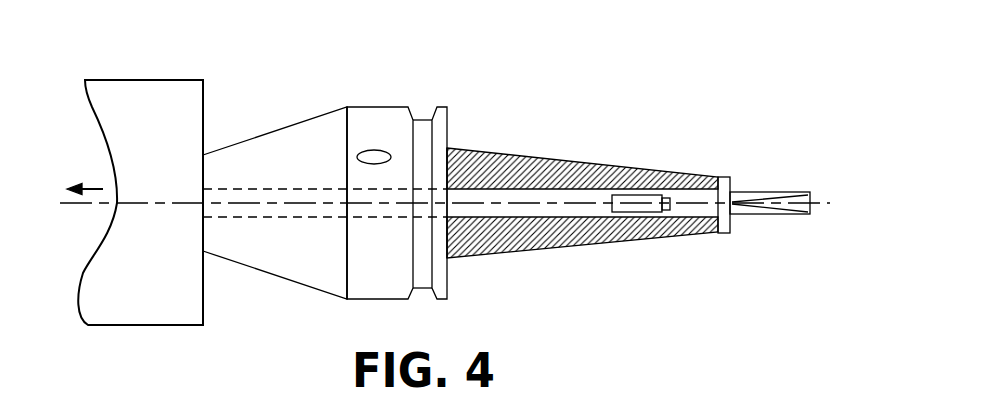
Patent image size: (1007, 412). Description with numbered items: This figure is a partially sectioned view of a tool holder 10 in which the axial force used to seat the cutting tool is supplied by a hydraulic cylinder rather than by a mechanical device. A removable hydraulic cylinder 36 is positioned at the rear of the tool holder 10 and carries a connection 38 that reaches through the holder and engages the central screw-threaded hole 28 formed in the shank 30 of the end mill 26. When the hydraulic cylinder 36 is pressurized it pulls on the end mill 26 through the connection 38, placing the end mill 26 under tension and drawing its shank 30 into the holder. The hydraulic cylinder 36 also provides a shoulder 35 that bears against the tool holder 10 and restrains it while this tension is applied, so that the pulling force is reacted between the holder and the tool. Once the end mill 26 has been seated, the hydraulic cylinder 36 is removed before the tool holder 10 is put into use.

The tool holder 10 is at (442, 120).
The end mill 26 is at (777, 182).
The central screw-threaded hole 28 is at (673, 192).
The shank 30 is at (698, 192).
The shoulder 35 is at (203, 132).
The hydraulic cylinder 36 is at (125, 92).
The connection 38 is at (565, 197).